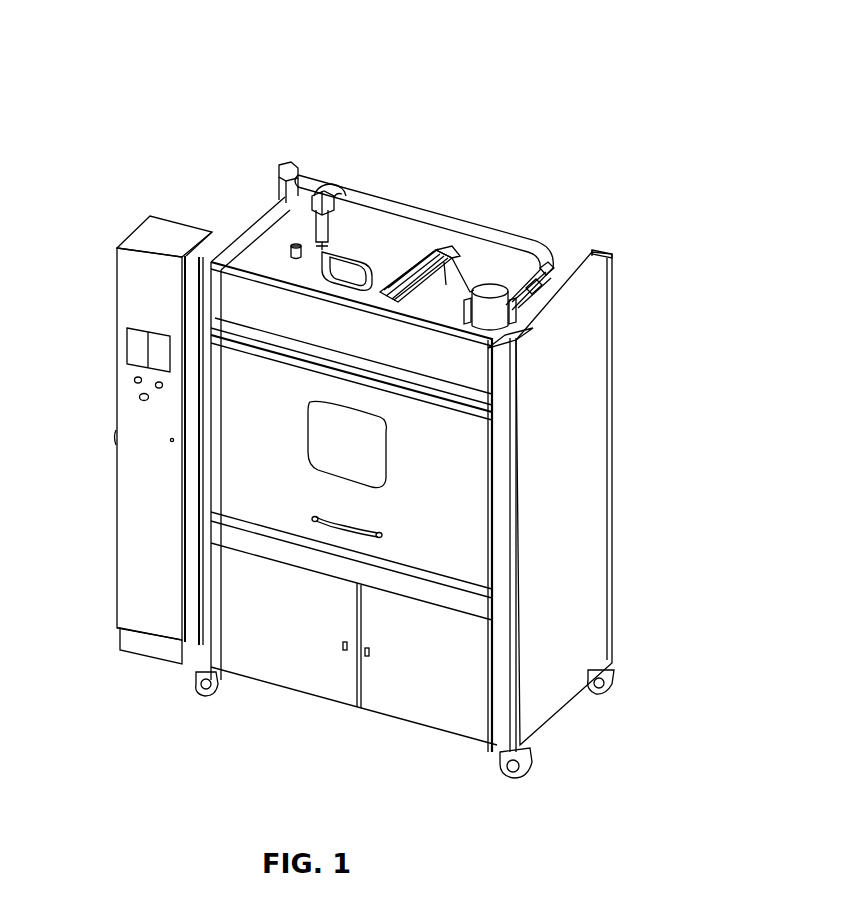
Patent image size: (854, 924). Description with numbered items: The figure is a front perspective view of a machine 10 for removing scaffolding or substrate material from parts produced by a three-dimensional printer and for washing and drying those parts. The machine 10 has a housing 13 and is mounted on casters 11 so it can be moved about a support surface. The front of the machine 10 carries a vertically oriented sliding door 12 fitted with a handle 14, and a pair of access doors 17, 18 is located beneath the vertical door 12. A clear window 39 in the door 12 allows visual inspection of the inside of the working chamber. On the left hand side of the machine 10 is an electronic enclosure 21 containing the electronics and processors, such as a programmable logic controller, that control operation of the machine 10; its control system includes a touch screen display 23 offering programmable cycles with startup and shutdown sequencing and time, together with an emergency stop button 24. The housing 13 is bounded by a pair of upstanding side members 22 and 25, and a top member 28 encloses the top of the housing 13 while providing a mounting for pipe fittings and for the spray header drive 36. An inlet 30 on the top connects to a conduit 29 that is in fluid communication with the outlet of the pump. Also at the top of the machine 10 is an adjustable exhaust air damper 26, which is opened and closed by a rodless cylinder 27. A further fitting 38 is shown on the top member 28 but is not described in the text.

The machine 10 is at (92, 108).
The casters 11 is at (200, 690).
The sliding door 12 is at (259, 460).
The housing 13 is at (540, 517).
The handle 14 is at (347, 527).
The access door 17 is at (285, 630).
The access door 18 is at (441, 682).
The electronic enclosure 21 is at (138, 493).
The side member 22 is at (283, 196).
The touch screen display 23 is at (137, 343).
The emergency stop button 24 is at (141, 398).
The side member 25 is at (590, 315).
The adjustable exhaust air damper 26 is at (494, 288).
The rodless cylinder 27 is at (544, 281).
The top member 28 is at (363, 252).
The conduit 29 is at (417, 213).
The inlet 30 is at (313, 188).
The spray header drive 36 is at (440, 253).
The drain fitting 38 is at (293, 247).
The clear window 39 is at (343, 262).